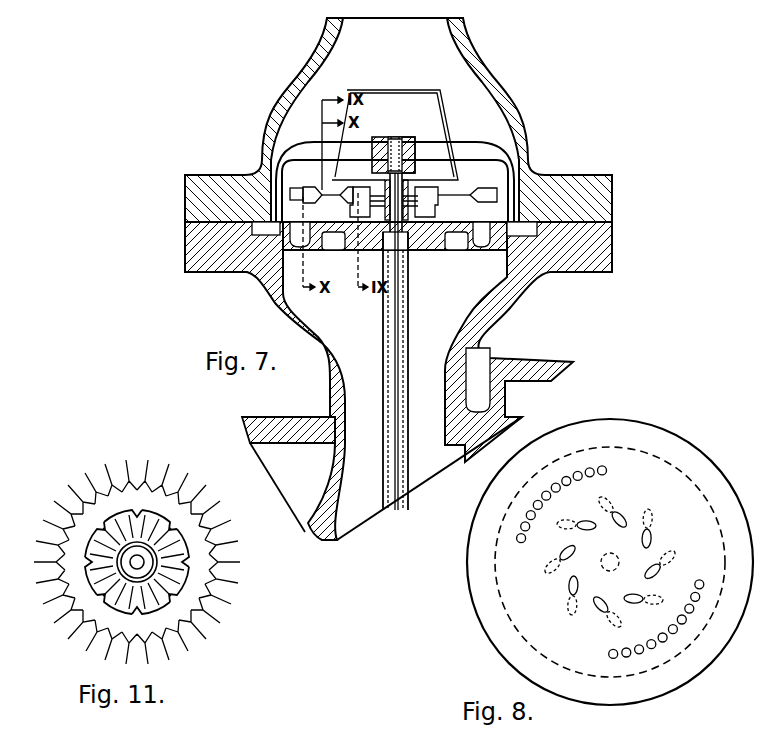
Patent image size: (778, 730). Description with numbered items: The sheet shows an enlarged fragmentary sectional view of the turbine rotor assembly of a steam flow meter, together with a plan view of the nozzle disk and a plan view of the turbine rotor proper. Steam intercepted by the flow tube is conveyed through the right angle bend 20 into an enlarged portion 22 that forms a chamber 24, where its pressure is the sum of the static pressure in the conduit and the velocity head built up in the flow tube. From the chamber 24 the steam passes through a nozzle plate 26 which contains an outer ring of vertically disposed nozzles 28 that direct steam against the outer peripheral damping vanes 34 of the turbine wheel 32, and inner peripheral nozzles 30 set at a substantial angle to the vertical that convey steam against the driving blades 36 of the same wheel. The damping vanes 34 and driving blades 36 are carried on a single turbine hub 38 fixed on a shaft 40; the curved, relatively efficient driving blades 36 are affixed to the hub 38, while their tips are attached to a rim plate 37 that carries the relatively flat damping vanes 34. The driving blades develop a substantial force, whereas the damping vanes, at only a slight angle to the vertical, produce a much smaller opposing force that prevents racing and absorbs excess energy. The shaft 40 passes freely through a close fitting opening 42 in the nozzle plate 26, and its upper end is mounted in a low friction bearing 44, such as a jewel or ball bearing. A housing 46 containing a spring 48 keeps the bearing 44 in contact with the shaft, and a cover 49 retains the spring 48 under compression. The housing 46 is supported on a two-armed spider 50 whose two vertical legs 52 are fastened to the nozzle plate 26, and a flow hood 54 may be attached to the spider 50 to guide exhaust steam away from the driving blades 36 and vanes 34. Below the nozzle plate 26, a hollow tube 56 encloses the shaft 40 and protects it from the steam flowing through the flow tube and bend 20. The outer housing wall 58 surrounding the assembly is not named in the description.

In FIG. 7, the right angle bend 20 is at (325, 492).
In FIG. 7, the enlarged portion 22 is at (275, 290).
In FIG. 7, the chamber 24 is at (483, 288).
In FIG. 7, the nozzle plate 26 is at (465, 225).
In FIG. 8, the nozzle plate 26 is at (657, 438).
In FIG. 7, the vertically disposed nozzles 28 is at (494, 227).
In FIG. 8, the vertically disposed nozzles 28 is at (525, 514).
In FIG. 7, the inner peripheral nozzles 30 is at (425, 228).
In FIG. 8, the inner peripheral nozzles 30 is at (568, 548).
In FIG. 7, the turbine wheel 32 is at (445, 190).
In FIG. 7, the damping vanes 34 is at (473, 197).
In FIG. 11, the damping vanes 34 is at (143, 563).
In FIG. 7, the driving blades 36 is at (443, 184).
In FIG. 11, the driving blades 36 is at (153, 523).
In FIG. 11, the rim plate 37 is at (200, 548).
In FIG. 7, the turbine hub 38 is at (407, 190).
In FIG. 11, the turbine hub 38 is at (146, 568).
In FIG. 7, the shaft 40 is at (403, 466).
In FIG. 7, the close fitting opening 42 is at (398, 246).
In FIG. 7, the low friction bearing 44 is at (412, 132).
In FIG. 7, the housing 46 is at (418, 143).
In FIG. 7, the spring 48 is at (391, 137).
In FIG. 7, the cover 49 is at (390, 140).
In FIG. 7, the two-armed spider 50 is at (302, 144).
In FIG. 7, the vertical legs 52 is at (285, 213).
In FIG. 7, the flow hood 54 is at (348, 98).
In FIG. 7, the hollow tube 56 is at (388, 465).
In FIG. 7, the upper housing 58 is at (478, 80).